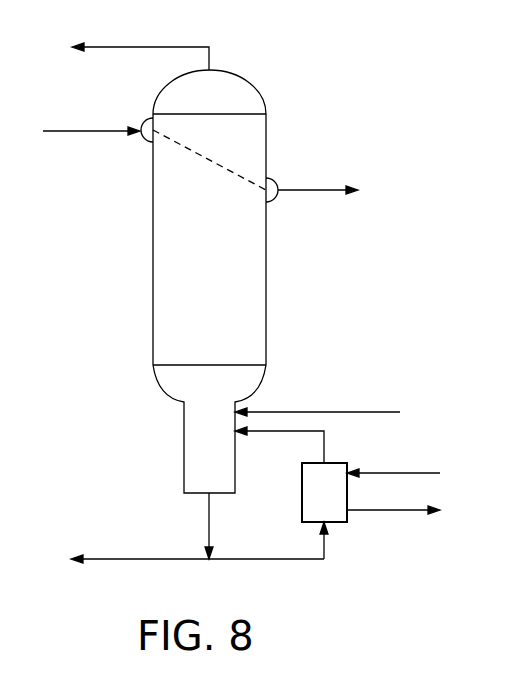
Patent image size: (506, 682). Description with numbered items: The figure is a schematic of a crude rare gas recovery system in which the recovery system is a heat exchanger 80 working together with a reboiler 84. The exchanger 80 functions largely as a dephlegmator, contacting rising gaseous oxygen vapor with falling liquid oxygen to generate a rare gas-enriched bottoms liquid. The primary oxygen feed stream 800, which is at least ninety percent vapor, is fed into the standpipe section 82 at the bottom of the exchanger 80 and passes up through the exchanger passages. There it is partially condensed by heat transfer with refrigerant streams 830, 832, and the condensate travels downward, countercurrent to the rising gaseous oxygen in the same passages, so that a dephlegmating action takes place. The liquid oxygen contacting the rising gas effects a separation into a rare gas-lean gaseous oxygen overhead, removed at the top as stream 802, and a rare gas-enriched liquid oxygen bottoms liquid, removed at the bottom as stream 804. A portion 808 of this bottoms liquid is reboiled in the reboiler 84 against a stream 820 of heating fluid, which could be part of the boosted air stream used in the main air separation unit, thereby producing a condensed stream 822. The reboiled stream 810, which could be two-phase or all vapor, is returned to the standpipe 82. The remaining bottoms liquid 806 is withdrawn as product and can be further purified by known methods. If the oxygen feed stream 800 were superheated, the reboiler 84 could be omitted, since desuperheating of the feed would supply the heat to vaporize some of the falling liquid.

The heat exchanger 80 is at (153, 249).
The standpipe section 82 is at (184, 440).
The reboiler 84 is at (302, 492).
The primary oxygen feed stream 800 is at (316, 411).
The rare gas-lean GOX overhead stream 802 is at (209, 58).
The rare gas-enriched LOX bottoms liquid stream 804 is at (209, 530).
The remaining bottoms liquid 806 is at (167, 561).
The portion of bottoms liquid 808 is at (253, 562).
The reboiled stream 810 is at (324, 446).
The stream of heating fluid 820 is at (413, 473).
The condensed stream 822 is at (375, 511).
The refrigerant stream 830 is at (102, 128).
The refrigerant stream 832 is at (297, 188).